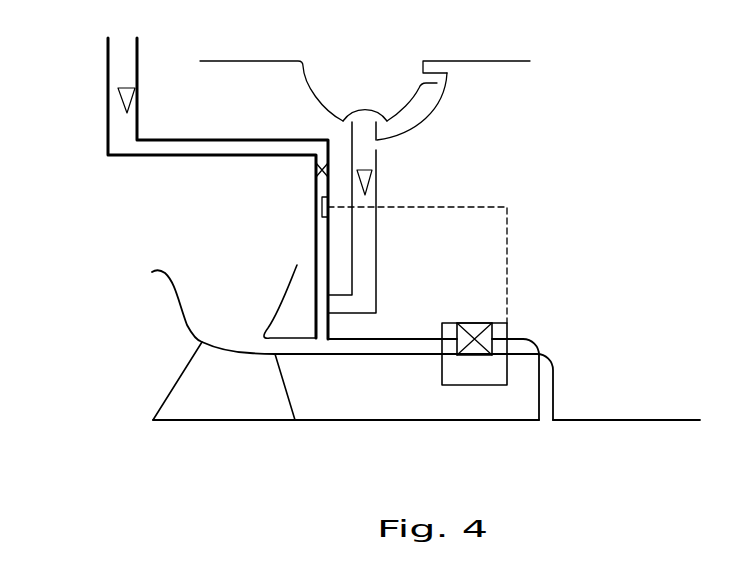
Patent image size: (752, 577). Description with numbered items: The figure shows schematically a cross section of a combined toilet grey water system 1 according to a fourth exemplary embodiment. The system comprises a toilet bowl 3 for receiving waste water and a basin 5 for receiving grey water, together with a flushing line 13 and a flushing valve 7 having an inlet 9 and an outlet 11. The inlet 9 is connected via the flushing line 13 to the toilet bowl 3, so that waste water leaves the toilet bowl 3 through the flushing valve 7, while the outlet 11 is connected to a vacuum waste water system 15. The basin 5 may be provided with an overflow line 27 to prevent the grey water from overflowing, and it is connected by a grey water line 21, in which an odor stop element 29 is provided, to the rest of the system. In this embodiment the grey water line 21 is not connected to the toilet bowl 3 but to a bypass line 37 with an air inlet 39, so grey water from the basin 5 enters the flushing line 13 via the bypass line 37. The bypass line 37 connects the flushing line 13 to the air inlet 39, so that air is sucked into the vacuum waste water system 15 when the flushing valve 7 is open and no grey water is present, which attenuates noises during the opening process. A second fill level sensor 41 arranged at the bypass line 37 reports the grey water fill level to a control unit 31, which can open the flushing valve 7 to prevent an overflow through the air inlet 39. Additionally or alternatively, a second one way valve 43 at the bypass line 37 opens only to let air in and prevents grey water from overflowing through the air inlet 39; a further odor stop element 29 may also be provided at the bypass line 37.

The combined toilet grey water system 1 is at (629, 81).
The toilet bowl 3 is at (163, 275).
The basin 5 is at (303, 78).
The flushing valve 7 is at (493, 336).
The inlet 9 is at (438, 347).
The outlet 11 is at (545, 349).
The flushing line 13 is at (228, 353).
The vacuum waste water system 15 is at (663, 449).
The grey water line 21 is at (380, 224).
The overflow line 27 is at (447, 95).
The odor stop element 29 is at (116, 97).
The control unit 31 is at (480, 386).
The bypass line 37 is at (172, 157).
The air inlet 39 is at (103, 43).
The second fill level sensor 41 is at (322, 207).
The second one way valve 43 is at (313, 170).